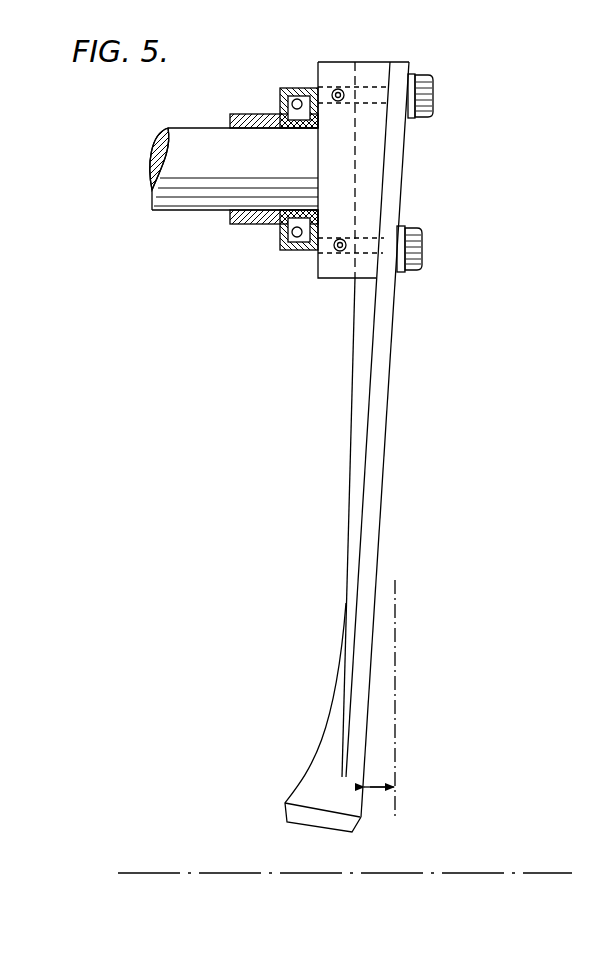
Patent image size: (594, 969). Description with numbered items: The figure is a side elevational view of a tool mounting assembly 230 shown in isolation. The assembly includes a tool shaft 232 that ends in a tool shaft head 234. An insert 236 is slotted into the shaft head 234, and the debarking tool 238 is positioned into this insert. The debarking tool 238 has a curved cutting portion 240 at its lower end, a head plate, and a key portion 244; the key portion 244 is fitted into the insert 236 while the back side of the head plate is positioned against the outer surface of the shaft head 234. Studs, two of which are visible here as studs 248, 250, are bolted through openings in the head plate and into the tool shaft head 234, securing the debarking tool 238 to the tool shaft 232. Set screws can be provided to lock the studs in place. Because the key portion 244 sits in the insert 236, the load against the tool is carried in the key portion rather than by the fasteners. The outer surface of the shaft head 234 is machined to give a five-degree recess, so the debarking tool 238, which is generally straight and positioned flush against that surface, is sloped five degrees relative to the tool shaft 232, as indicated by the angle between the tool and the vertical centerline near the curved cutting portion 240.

The tool mounting assembly 230 is at (321, 447).
The tool shaft 232 is at (192, 193).
The tool shaft head 234 is at (392, 218).
The insert 236 is at (360, 203).
The debarking tool 238 is at (383, 433).
The curved cutting portion 240 is at (333, 703).
The key portion 244 is at (375, 152).
The stud 248 is at (434, 94).
The stud 250 is at (421, 255).